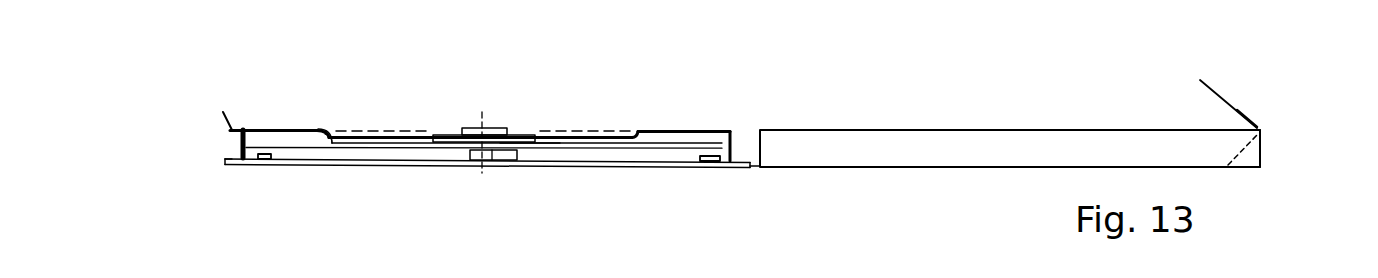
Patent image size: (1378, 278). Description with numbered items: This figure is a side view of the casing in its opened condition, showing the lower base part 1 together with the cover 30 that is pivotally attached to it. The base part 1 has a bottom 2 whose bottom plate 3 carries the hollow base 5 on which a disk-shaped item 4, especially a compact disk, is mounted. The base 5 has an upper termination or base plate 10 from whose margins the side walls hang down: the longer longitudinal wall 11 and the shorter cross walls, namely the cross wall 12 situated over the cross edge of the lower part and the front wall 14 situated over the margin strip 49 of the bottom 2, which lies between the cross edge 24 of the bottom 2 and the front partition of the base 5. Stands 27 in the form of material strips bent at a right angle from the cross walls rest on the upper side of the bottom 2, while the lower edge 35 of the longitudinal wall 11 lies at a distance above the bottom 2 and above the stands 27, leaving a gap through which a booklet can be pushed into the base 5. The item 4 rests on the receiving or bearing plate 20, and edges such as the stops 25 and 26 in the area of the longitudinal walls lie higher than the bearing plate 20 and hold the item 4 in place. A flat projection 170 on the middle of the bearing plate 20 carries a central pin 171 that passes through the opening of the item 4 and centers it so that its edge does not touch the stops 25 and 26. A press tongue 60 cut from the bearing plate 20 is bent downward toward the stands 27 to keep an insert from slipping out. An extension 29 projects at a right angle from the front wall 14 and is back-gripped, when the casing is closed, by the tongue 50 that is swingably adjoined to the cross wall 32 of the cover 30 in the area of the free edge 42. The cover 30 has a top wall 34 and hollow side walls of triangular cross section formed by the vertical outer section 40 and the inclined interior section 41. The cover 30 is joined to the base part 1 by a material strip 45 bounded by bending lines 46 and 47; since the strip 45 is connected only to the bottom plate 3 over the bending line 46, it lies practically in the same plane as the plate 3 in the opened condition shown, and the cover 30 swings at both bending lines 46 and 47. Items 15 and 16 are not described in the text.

The base part 1 is at (721, 114).
The bottom 2 is at (397, 165).
The bottom plate 3 is at (337, 170).
The disk-shaped item 4 is at (573, 128).
The base 5 is at (263, 123).
The base plate 10 is at (305, 128).
The longitudinal wall 11 is at (689, 142).
The cross wall 12 is at (738, 130).
The front wall 14 is at (243, 145).
The bend 15 is at (329, 129).
The card guide surface 16 is at (634, 142).
The bearing plate 20 is at (518, 146).
The cross edge 24 is at (227, 160).
The stop 25 is at (333, 134).
The stop 26 is at (637, 132).
The stand 27 is at (262, 160).
The extension 29 is at (230, 128).
The cover 30 is at (1005, 118).
The cross wall 32 is at (1262, 157).
The top wall 34 is at (953, 168).
The lower edge 35 is at (653, 148).
The outer section 40 is at (1262, 131).
The interior section 41 is at (1242, 150).
The free edge 42 is at (1237, 110).
The material strip 45 is at (742, 168).
The bending line 46 is at (724, 162).
The bending line 47 is at (753, 168).
The margin strip 49 is at (240, 164).
The tongue 50 is at (1217, 93).
The press tongue 60 is at (470, 152).
The flat projection 170 is at (447, 135).
The pin 171 is at (488, 128).